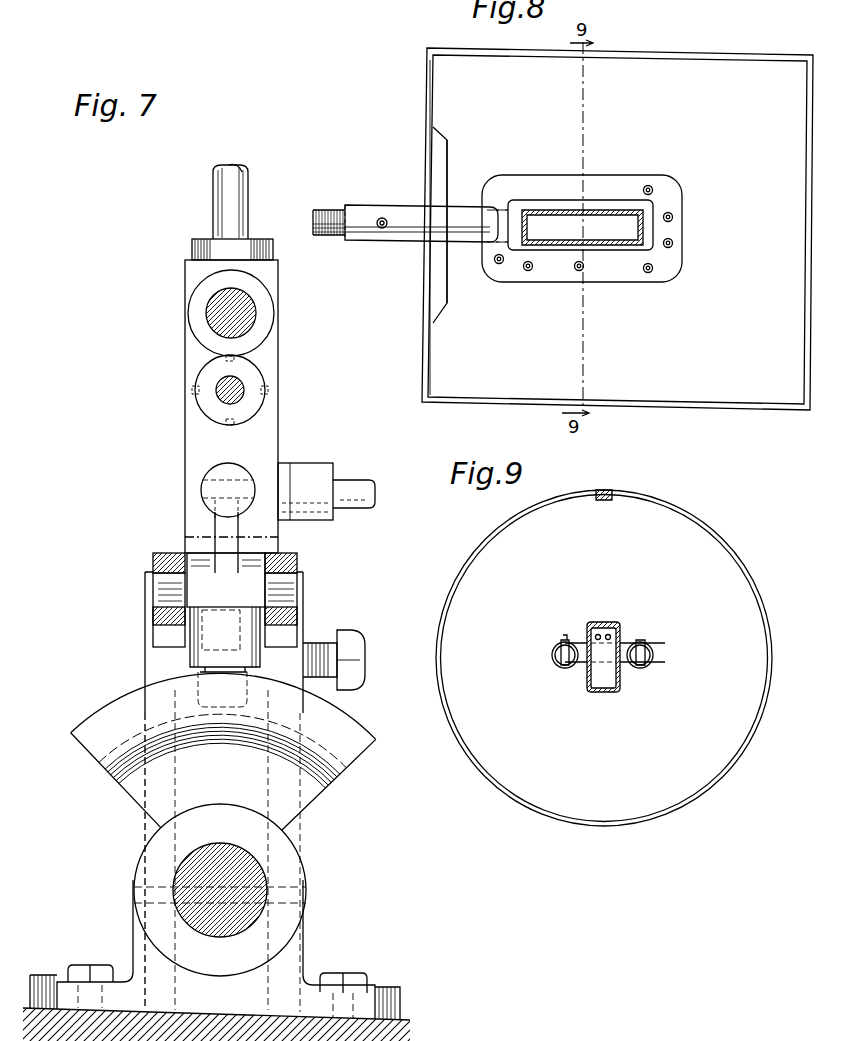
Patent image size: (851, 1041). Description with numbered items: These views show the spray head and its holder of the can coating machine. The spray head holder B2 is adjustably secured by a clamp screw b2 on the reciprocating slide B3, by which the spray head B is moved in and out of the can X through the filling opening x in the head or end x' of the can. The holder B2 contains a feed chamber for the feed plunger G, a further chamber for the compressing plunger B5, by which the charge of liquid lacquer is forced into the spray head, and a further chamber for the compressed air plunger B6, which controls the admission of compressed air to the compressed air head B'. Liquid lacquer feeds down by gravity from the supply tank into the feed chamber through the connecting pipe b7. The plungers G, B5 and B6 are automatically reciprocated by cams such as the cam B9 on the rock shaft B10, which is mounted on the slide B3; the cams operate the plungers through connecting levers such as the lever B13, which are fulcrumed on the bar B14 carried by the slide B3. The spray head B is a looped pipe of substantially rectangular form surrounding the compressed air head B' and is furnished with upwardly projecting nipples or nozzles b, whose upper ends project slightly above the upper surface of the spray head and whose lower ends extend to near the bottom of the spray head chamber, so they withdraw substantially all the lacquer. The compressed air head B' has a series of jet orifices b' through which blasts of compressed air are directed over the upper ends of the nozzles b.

In FIG. 7, the connecting pipe b7 is at (250, 199).
In FIG. 8, the connecting pipe b7 is at (411, 223).
In FIG. 7, the spray head holder B2 is at (279, 380).
In FIG. 7, the feed plunger G is at (213, 310).
In FIG. 7, the compressing plunger B5 is at (218, 397).
In FIG. 7, the compressed air plunger B6 is at (203, 488).
In FIG. 7, the bar B14 is at (300, 571).
In FIG. 7, the connecting lever B13 is at (226, 630).
In FIG. 7, the clamp screw b2 is at (352, 632).
In FIG. 7, the cam B9 is at (223, 751).
In FIG. 7, the rock shaft B10 is at (222, 937).
In FIG. 7, the reciprocating slide B3 is at (410, 1031).
In FIG. 8, the filling opening x is at (595, 229).
In FIG. 8, the head or end of the can x' is at (451, 227).
In FIG. 8, the spray head B is at (601, 228).
In FIG. 9, the spray head B is at (627, 658).
In FIG. 8, the compressed air head B' is at (582, 192).
In FIG. 9, the compressed air head B' is at (599, 630).
In FIG. 8, the nipples or nozzles b is at (594, 246).
In FIG. 9, the nipples or nozzles b is at (613, 632).
In FIG. 9, the can X is at (630, 490).
In FIG. 9, the jet orifices b' is at (615, 610).